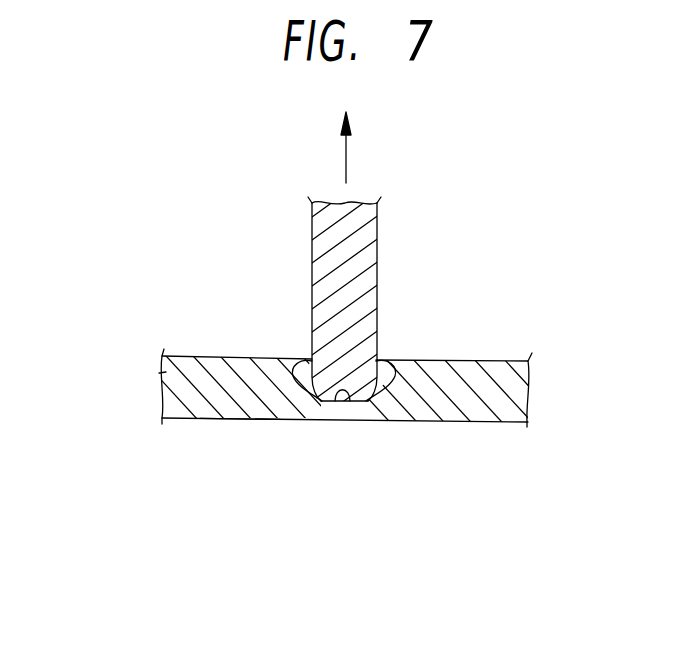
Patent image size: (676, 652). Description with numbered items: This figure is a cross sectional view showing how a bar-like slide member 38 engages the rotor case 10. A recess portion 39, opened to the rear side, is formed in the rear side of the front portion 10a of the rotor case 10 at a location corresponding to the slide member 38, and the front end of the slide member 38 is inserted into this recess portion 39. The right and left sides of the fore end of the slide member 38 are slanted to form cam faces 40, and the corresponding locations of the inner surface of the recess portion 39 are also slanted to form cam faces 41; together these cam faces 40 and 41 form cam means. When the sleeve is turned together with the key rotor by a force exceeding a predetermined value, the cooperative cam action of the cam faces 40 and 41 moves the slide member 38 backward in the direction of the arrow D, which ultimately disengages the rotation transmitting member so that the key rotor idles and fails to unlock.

The slide member 38 is at (377, 242).
The rotor case 10 is at (160, 373).
The front portion of the rotor case 10a is at (238, 419).
The cam face 40 is at (300, 361).
The cam face 41 is at (327, 402).
The recess portion 39 is at (346, 402).
The arrow D is at (346, 158).